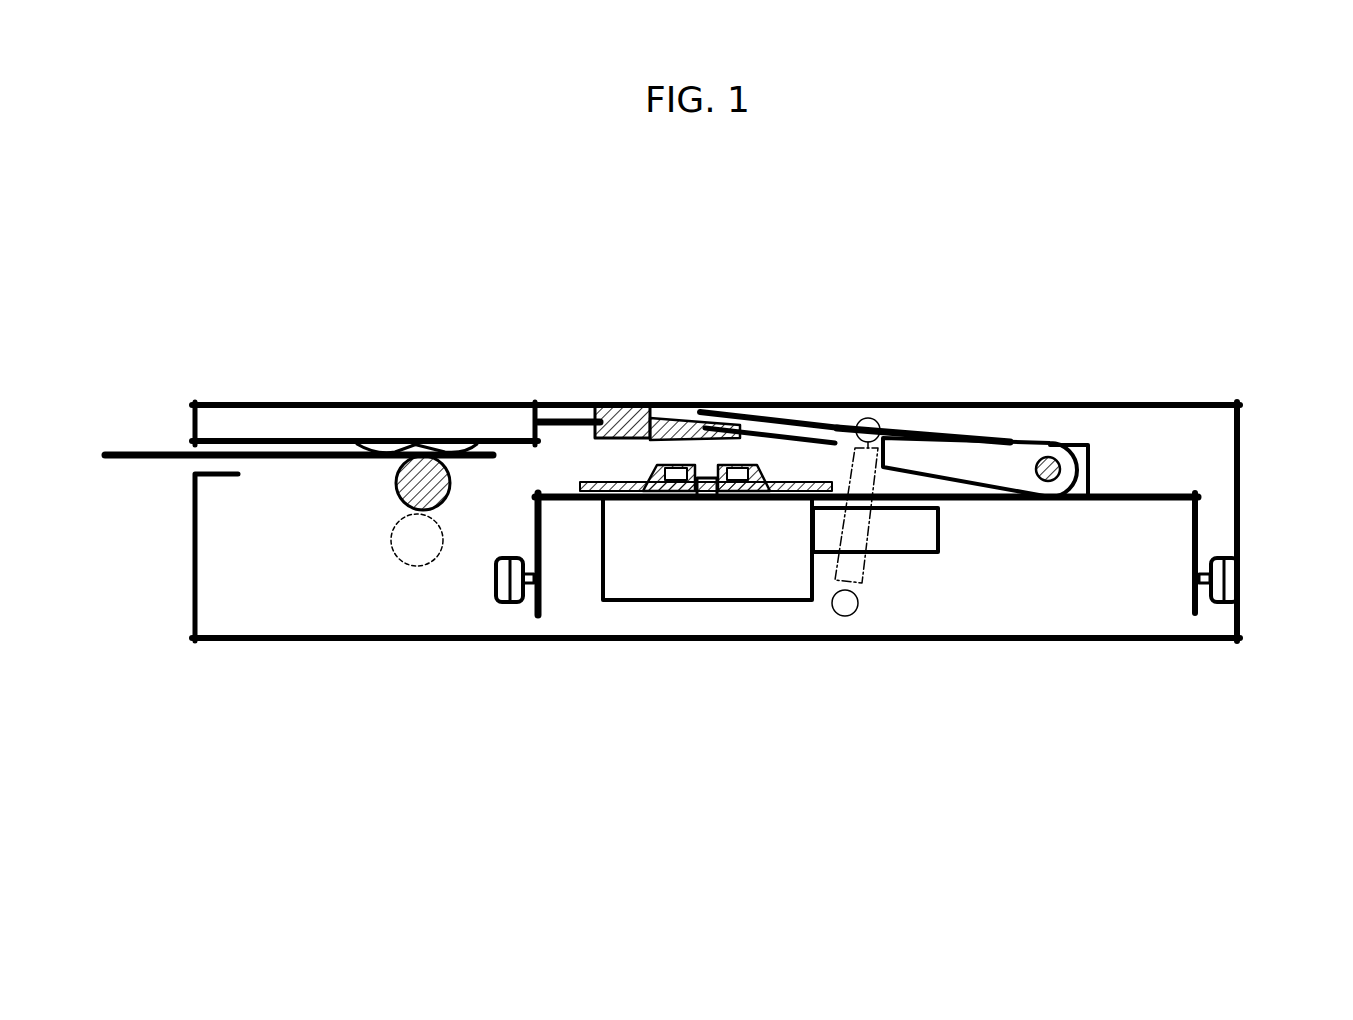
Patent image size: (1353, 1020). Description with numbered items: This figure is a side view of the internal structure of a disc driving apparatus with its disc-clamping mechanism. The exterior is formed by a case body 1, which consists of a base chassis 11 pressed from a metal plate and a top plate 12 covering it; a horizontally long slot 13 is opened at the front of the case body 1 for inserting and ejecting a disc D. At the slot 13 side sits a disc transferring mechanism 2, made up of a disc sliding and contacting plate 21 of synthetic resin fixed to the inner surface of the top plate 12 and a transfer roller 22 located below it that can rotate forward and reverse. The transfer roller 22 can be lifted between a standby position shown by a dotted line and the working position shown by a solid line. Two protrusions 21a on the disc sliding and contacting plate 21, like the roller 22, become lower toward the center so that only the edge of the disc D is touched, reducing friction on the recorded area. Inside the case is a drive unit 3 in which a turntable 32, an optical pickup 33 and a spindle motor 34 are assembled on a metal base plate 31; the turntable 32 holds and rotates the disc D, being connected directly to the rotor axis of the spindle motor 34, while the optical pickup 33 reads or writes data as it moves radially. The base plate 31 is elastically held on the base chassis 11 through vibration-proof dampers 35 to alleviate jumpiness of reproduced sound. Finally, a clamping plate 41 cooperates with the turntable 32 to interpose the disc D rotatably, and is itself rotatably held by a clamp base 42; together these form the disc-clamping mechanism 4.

The case body 1 is at (729, 511).
The disc transferring mechanism 2 is at (365, 493).
The drive unit 3 is at (911, 537).
The disc-clamping mechanism 4 is at (813, 376).
The base chassis 11 is at (1098, 638).
The top plate 12 is at (1080, 403).
The slot 13 is at (178, 440).
The disc sliding and contacting plate 21 is at (330, 418).
The protrusions 21a is at (390, 442).
The transfer roller 22 is at (395, 488).
The base plate 31 is at (1200, 507).
The turntable 32 is at (655, 465).
The optical pickup 33 is at (892, 545).
The spindle motor 34 is at (700, 578).
The vibration-proof dampers 35 is at (497, 603).
The clamping plate 41 is at (707, 405).
The clamp base 42 is at (918, 420).
The disc D is at (152, 458).